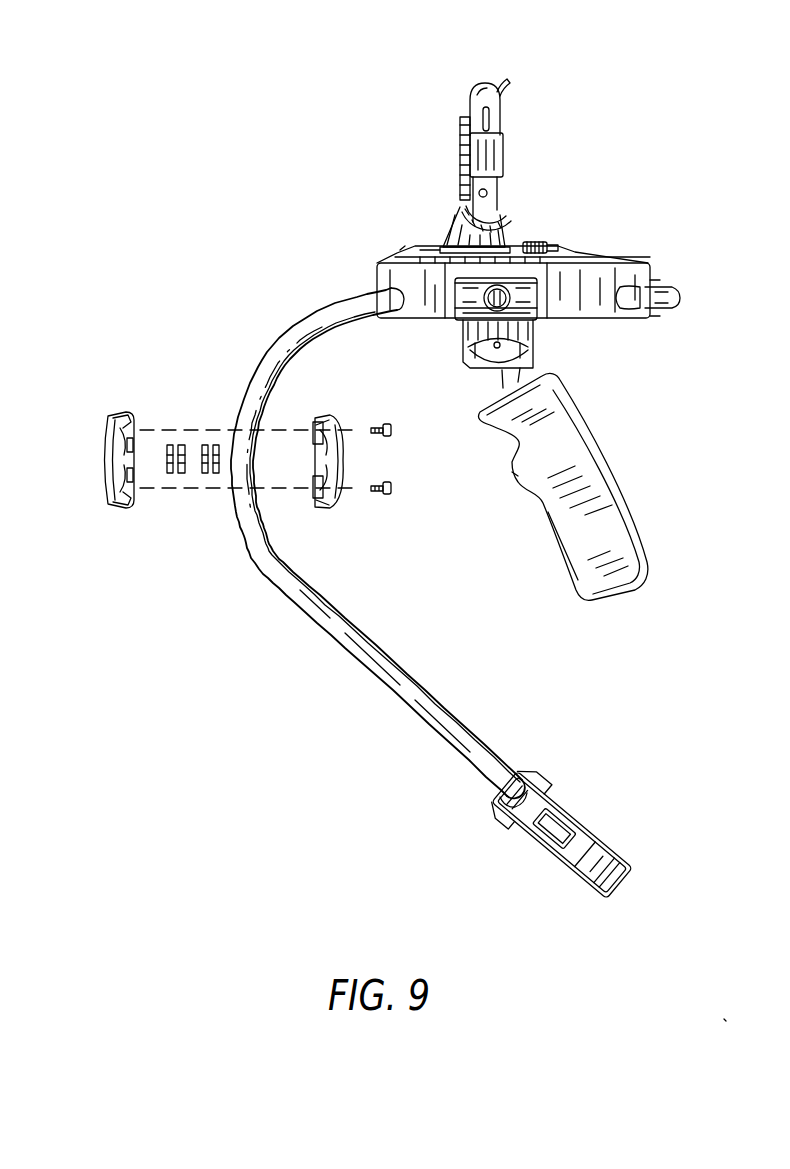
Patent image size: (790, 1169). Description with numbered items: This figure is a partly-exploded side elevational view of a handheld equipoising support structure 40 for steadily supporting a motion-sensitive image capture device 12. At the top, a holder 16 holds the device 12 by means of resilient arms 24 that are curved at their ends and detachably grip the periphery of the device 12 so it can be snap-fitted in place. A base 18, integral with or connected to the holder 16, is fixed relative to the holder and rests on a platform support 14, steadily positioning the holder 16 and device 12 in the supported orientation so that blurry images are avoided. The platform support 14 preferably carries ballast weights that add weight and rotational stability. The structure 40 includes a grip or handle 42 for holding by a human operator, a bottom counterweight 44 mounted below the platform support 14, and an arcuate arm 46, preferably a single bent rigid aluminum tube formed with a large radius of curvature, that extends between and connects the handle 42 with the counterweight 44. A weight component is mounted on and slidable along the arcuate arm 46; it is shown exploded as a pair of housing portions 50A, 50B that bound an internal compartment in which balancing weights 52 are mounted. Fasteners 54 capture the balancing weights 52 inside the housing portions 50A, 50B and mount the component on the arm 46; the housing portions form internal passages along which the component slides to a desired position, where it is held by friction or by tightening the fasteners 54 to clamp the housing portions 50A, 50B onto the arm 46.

The handheld equipoising support structure 40 is at (265, 325).
The image capture device 12 is at (492, 115).
The platform support 14 is at (548, 249).
The holder 16 is at (458, 120).
The base 18 is at (455, 235).
The arms 24 is at (485, 85).
The handle 42 is at (605, 482).
The bottom counterweight 44 is at (550, 793).
The arcuate arm 46 is at (248, 410).
The housing portion 50A is at (112, 435).
The housing portion 50B is at (326, 415).
The balancing weights 52 is at (216, 475).
The fasteners 54 is at (392, 488).